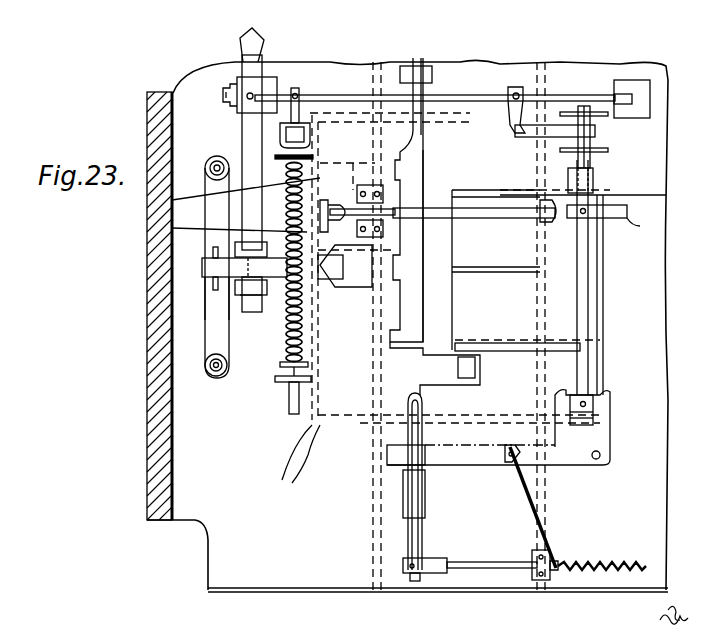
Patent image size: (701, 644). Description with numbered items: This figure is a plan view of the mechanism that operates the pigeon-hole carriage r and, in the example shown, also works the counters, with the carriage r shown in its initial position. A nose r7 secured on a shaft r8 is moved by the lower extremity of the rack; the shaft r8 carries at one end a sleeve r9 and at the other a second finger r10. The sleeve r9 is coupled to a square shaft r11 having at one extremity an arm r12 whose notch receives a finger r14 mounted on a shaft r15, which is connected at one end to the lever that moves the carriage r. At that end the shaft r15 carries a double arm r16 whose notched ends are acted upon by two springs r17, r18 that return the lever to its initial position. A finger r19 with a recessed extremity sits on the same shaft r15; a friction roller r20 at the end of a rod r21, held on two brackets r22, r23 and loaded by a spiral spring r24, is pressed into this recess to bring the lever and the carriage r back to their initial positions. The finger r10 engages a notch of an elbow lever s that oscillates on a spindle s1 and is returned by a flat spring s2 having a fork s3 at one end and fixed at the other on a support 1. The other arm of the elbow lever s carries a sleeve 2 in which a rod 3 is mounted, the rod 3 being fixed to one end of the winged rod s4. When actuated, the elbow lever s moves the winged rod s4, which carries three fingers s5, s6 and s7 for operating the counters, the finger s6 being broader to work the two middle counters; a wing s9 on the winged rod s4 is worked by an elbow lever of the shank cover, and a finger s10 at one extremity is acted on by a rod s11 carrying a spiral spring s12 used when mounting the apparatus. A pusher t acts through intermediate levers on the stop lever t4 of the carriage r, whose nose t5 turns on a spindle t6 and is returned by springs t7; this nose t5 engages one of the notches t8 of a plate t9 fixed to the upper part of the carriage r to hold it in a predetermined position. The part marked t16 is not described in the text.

The spring r18 is at (250, 42).
The spring r17 is at (250, 148).
The double arm r16 is at (237, 113).
The finger r19 is at (296, 88).
The shaft r15 is at (468, 96).
The finger r14 is at (516, 88).
The arm r12 is at (520, 137).
The square shaft r11 is at (592, 152).
The sleeve r9 is at (595, 180).
The nose r7 is at (608, 222).
The shaft r8 is at (582, 308).
The finger r10 is at (585, 404).
The friction roller r20 is at (283, 160).
The bracket r23 is at (285, 157).
The spiral spring r24 is at (282, 366).
The bracket r22 is at (285, 382).
The rod r21 is at (292, 414).
The carriage r is at (280, 465).
The pusher t is at (493, 218).
The stop lever t4 is at (215, 266).
The nose t5 is at (212, 230).
The spindle t6 is at (251, 296).
The springs t7 is at (230, 318).
The notches t8 is at (365, 155).
The plate t9 is at (296, 485).
The box t16 is at (460, 335).
The elbow lever s is at (582, 466).
The spindle s1 is at (600, 460).
The flat spring s2 is at (532, 505).
The fork s3 is at (506, 462).
The winged rod s4 is at (370, 415).
The finger s5 is at (405, 347).
The finger s6 is at (396, 262).
The finger s7 is at (403, 168).
The wing s9 is at (443, 372).
The finger s10 is at (373, 552).
The rod s11 is at (462, 562).
The spiral spring s12 is at (605, 562).
The support 1 is at (556, 580).
The sleeve 2 is at (425, 457).
The rod 3 is at (403, 515).